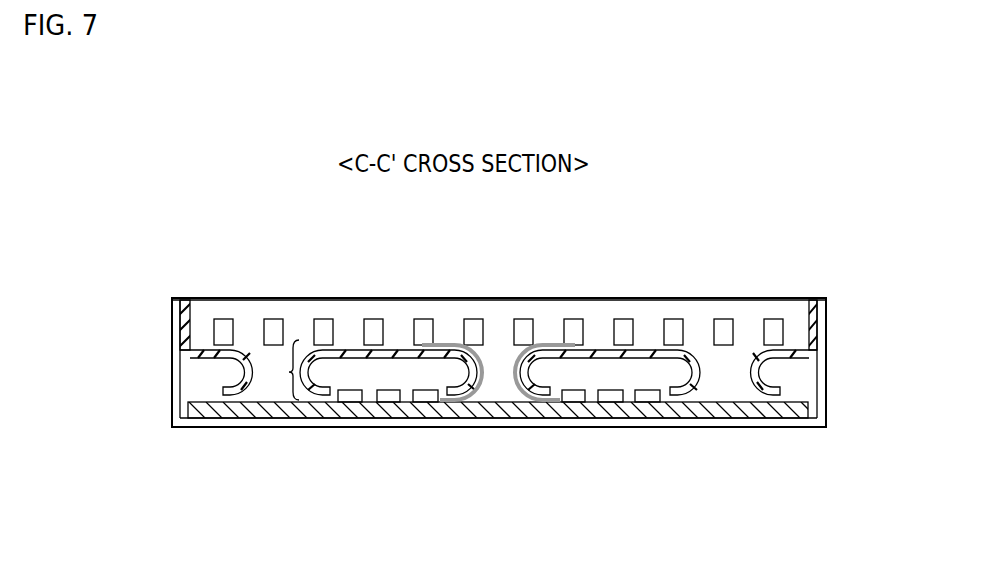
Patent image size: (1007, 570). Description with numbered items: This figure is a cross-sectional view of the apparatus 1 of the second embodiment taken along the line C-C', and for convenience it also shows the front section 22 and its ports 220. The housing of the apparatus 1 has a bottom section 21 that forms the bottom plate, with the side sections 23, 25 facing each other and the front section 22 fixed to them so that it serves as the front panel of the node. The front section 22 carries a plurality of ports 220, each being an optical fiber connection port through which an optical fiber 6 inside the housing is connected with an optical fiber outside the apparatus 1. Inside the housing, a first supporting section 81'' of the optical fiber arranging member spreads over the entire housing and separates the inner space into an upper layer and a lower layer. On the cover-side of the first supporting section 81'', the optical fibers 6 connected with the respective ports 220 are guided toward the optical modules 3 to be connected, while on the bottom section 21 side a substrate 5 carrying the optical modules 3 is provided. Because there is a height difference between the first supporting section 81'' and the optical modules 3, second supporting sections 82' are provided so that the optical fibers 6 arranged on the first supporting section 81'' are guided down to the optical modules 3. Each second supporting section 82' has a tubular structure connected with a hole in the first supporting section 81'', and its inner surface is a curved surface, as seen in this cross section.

The apparatus 1 is at (846, 197).
The optical module 3 is at (387, 396).
The substrate 5 is at (250, 410).
The optical fiber 6 is at (527, 378).
The bottom section 21 is at (186, 420).
The front section 22 is at (249, 310).
The side section 23 is at (172, 312).
The side section 25 is at (826, 358).
The first supporting section 81'' is at (785, 413).
The second supporting section 82' is at (208, 370).
The port 220 is at (322, 325).